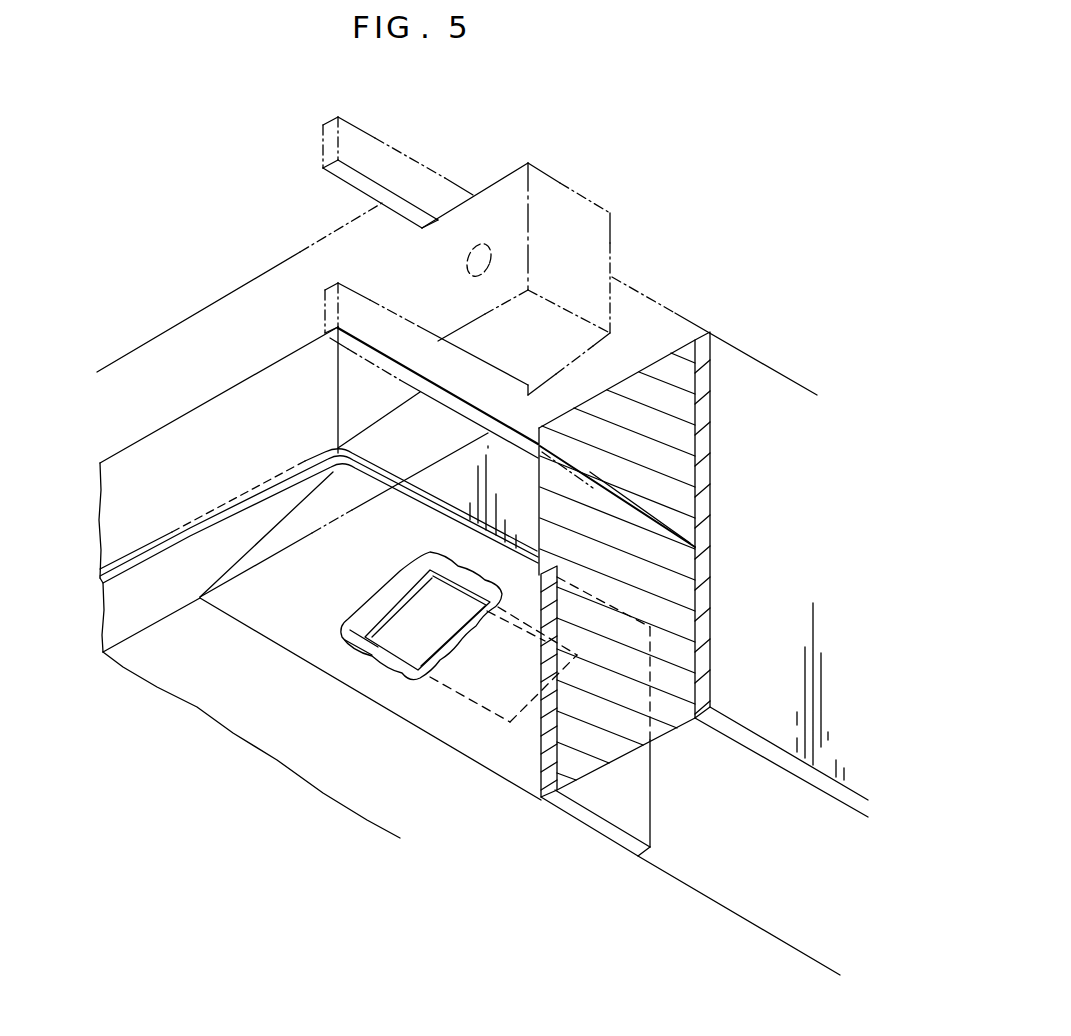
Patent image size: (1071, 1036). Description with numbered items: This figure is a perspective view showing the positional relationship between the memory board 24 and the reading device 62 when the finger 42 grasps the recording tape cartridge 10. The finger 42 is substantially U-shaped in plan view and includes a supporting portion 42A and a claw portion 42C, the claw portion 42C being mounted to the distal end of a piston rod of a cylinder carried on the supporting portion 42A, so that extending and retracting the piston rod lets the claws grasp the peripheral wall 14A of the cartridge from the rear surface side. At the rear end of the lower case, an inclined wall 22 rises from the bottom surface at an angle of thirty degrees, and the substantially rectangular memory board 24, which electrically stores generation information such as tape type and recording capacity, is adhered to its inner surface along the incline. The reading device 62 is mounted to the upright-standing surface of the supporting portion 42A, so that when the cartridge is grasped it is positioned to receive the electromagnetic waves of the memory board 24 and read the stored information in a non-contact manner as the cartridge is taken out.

The recording tape cartridge 10 is at (117, 499).
The peripheral wall 14A is at (118, 607).
The inclined wall 22 is at (267, 625).
The memory board 24 is at (387, 638).
The finger 42 is at (733, 341).
The supporting portion 42A is at (683, 498).
The claw portion 42C is at (265, 292).
The reading device 62 is at (527, 750).